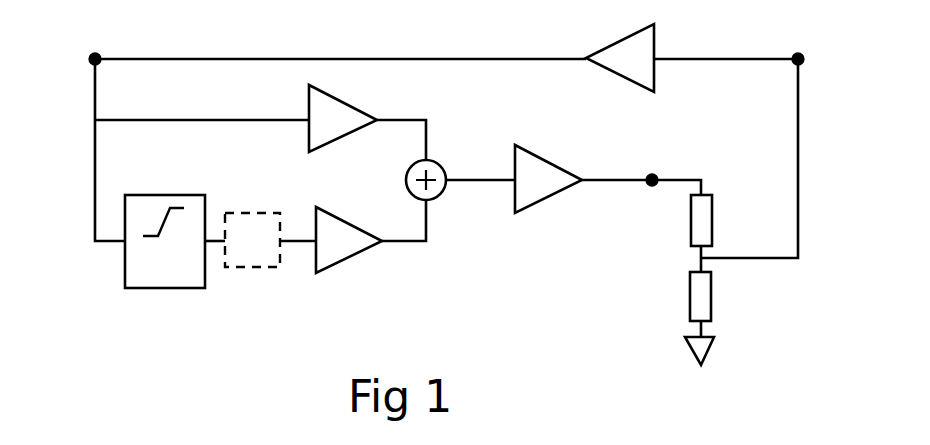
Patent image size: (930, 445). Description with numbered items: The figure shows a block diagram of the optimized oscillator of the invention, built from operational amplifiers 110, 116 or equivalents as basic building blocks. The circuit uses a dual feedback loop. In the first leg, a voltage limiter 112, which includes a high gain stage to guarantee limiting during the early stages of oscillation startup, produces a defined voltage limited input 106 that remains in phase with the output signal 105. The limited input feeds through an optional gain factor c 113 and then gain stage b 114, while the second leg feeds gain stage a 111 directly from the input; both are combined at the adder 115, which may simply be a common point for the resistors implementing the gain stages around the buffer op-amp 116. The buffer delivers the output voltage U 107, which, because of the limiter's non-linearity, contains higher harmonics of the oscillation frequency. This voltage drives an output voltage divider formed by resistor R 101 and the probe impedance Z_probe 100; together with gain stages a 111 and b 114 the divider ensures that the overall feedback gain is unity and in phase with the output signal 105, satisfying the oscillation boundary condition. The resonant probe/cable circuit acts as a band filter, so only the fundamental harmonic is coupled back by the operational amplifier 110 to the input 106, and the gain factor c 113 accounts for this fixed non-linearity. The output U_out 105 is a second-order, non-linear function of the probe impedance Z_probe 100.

The probe impedance 100 is at (688, 300).
The resistor R 101 is at (688, 222).
The output signal 105 is at (790, 62).
The voltage limited input 106 is at (98, 64).
The output voltage U 107 is at (658, 175).
The operational amplifier 110 is at (612, 70).
The gain stage a 111 is at (355, 105).
The voltage limiter 112 is at (162, 290).
The gain factor c 113 is at (258, 270).
The gain stage b 114 is at (350, 256).
The adder 115 is at (440, 196).
The buffer op-amp 116 is at (547, 197).